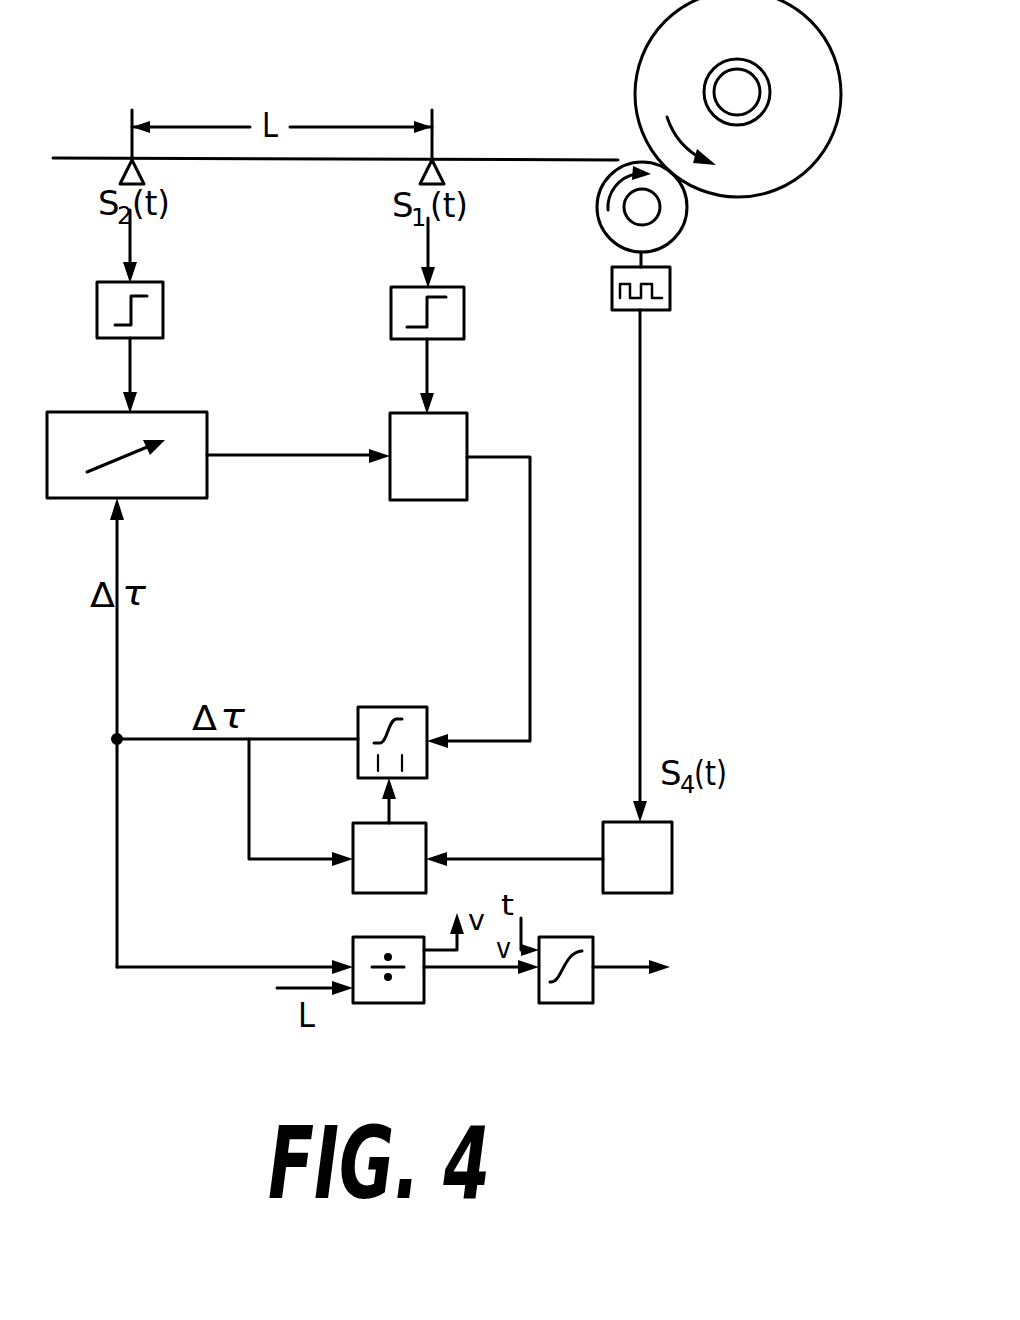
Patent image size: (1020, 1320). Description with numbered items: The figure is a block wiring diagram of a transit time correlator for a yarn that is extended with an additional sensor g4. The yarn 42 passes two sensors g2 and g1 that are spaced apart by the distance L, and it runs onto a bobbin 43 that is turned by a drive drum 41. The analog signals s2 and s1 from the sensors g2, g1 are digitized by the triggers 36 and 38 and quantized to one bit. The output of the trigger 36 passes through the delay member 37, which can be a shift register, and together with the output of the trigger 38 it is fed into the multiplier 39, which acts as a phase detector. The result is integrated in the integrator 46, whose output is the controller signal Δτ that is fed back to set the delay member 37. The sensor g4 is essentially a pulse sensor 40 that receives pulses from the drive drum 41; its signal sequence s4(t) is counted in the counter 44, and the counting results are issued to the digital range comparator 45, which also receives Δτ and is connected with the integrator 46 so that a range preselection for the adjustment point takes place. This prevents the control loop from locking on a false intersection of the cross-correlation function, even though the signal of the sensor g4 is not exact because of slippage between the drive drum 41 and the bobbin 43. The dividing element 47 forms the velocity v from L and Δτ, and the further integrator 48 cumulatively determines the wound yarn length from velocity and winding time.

The trigger 36 is at (163, 316).
The delay member 37 is at (203, 428).
The trigger 38 is at (464, 317).
The multiplier 39 is at (455, 423).
The pulse sensor 40 is at (670, 290).
The drive drum 41 is at (673, 227).
The web / material strip 42 is at (549, 158).
The bobbin 43 is at (823, 128).
The counter 44 is at (667, 848).
The digital range comparator 45 is at (420, 830).
The integrator 46 is at (425, 715).
The dividing element 47 is at (412, 993).
The further integrator 48 is at (567, 1000).
The sensor g1 is at (440, 150).
The sensor g2 is at (130, 153).
The sensor g4 is at (653, 320).